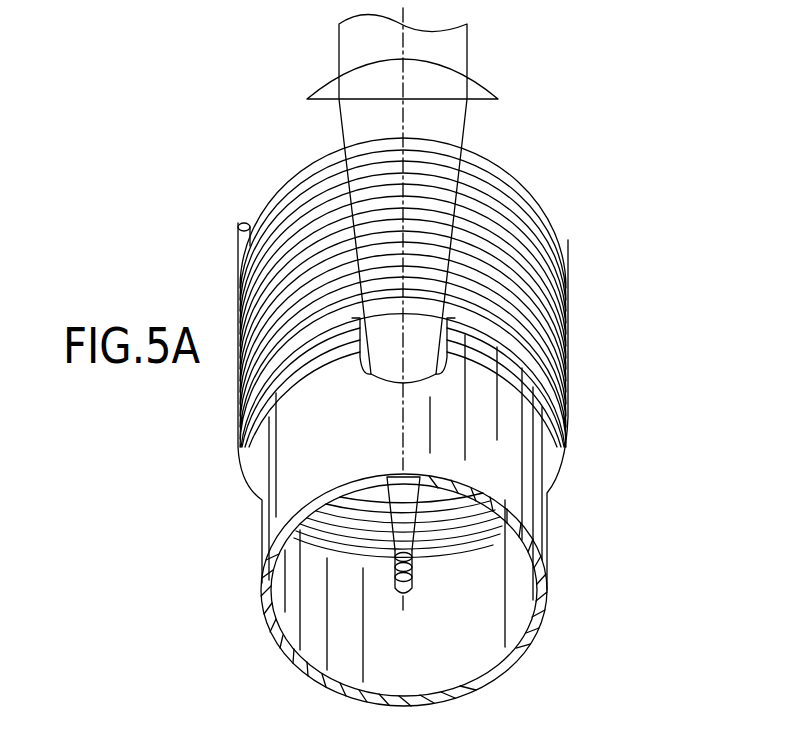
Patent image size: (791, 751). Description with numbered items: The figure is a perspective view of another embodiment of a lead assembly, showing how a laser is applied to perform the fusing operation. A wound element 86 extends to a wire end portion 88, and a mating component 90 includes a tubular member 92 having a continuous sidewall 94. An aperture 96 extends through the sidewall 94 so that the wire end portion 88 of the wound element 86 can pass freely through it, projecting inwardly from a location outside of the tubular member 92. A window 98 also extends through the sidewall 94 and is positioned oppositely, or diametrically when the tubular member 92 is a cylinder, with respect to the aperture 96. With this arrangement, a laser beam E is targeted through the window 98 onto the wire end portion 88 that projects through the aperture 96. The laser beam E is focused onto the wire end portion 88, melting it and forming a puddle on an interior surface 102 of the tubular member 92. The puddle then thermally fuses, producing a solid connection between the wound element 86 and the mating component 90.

The laser beam E is at (357, 43).
The wound element 86 is at (552, 293).
The wire end portion 88 is at (428, 578).
The mating component 90 is at (567, 517).
The tubular member 92 is at (298, 664).
The continuous sidewall 94 is at (276, 509).
The aperture 96 is at (404, 592).
The window 98 is at (374, 383).
The interior surface 102 is at (433, 673).